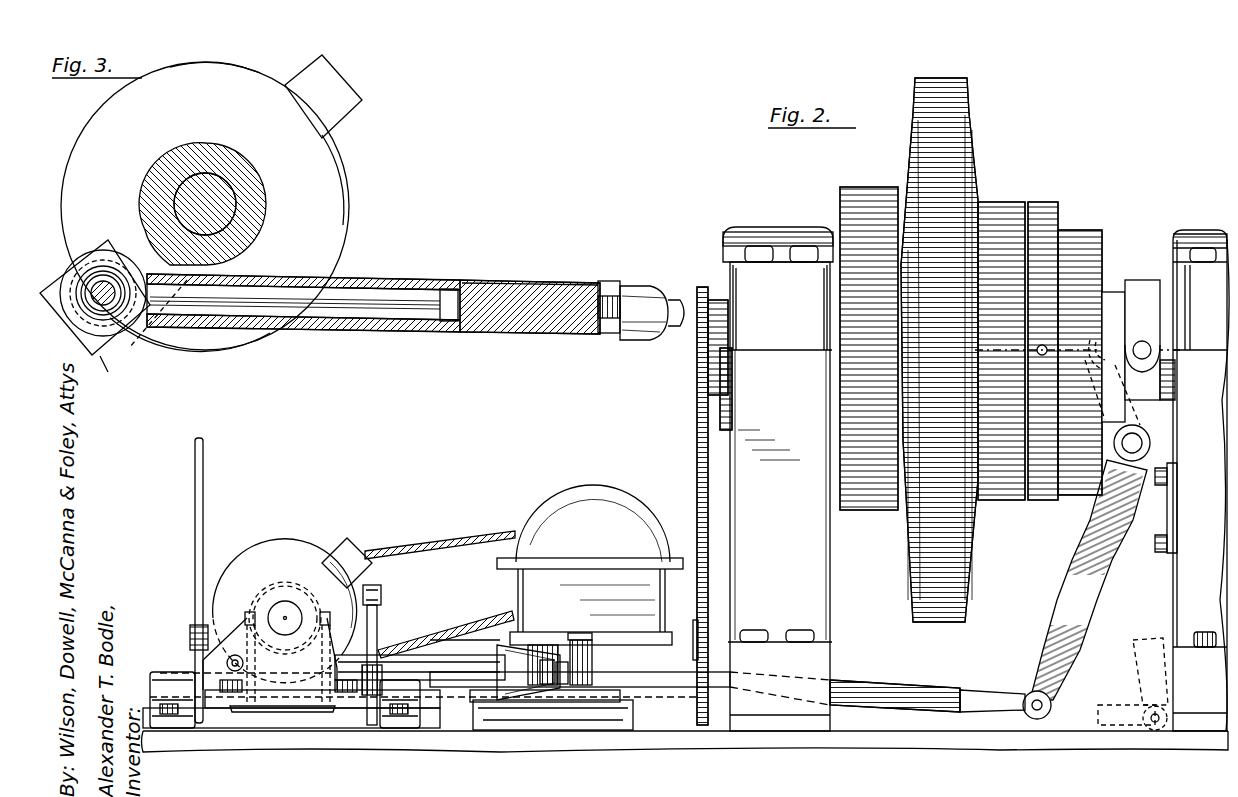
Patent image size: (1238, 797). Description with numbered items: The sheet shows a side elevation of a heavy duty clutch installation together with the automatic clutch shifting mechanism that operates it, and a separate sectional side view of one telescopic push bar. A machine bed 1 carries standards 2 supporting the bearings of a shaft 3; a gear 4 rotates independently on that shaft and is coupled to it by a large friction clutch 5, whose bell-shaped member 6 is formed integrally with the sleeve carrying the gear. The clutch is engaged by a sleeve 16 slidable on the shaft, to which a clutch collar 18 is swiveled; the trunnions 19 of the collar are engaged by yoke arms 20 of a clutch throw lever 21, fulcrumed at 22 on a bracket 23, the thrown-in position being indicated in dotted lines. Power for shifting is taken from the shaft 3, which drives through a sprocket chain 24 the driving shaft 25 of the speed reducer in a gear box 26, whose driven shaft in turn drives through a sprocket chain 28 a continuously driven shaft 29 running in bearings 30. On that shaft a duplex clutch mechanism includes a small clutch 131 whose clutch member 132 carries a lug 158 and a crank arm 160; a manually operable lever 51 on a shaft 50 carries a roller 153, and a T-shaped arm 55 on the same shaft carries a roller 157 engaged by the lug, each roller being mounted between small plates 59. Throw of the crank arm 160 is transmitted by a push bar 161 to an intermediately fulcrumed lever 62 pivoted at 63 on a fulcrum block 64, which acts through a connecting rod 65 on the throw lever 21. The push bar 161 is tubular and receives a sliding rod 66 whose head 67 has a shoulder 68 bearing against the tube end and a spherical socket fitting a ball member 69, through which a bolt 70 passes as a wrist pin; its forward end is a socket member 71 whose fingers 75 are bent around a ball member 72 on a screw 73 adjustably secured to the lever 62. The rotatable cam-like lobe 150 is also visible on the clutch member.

In FIG. 2, the machine bed 1 is at (914, 740).
In FIG. 2, the standards 2 is at (824, 578).
In FIG. 2, the shaft 3 is at (695, 375).
In FIG. 2, the gear 4 is at (870, 498).
In FIG. 2, the large friction clutch 5 is at (980, 153).
In FIG. 2, the bell-shaped member 6 is at (908, 152).
In FIG. 2, the sleeve 16 is at (1112, 298).
In FIG. 2, the clutch collar 18 is at (1140, 283).
In FIG. 2, the trunnions 19 is at (1142, 341).
In FIG. 2, the yoke arms 20 is at (1168, 388).
In FIG. 2, the clutch throw lever 21 is at (1088, 563).
In FIG. 2, the fulcrum 22 is at (1152, 443).
In FIG. 2, the bracket 23 is at (1162, 528).
In FIG. 2, the sprocket chain 24 is at (698, 478).
In FIG. 2, the driving shaft 25 is at (700, 624).
In FIG. 2, the gear box 26 is at (543, 596).
In FIG. 2, the sprocket chain 28 is at (437, 548).
In FIG. 3, the shaft 29 is at (222, 208).
In FIG. 2, the shaft 29 is at (286, 604).
In FIG. 2, the bearings 30 is at (252, 612).
In FIG. 2, the shaft 50 is at (148, 690).
In FIG. 2, the lever 51 is at (204, 488).
In FIG. 2, the T-shaped arm 55 is at (380, 650).
In FIG. 2, the small plates 59 is at (378, 594).
In FIG. 2, the intermediately fulcrumed lever 62 is at (542, 648).
In FIG. 2, the pivot 63 is at (580, 634).
In FIG. 2, the fulcrum block 64 is at (486, 712).
In FIG. 2, the connecting rod 65 is at (910, 690).
In FIG. 3, the rod 66 is at (386, 312).
In FIG. 2, the rod 66 is at (425, 676).
In FIG. 3, the head 67 is at (112, 270).
In FIG. 3, the shoulder 68 is at (150, 280).
In FIG. 3, the ball member 69 is at (157, 323).
In FIG. 3, the bolt 70 is at (128, 197).
In FIG. 3, the socket member 71 is at (642, 300).
In FIG. 2, the socket member 71 is at (508, 662).
In FIG. 3, the ball member 72 is at (612, 288).
In FIG. 2, the ball member 72 is at (546, 690).
In FIG. 2, the screw 73 is at (566, 688).
In FIG. 3, the fingers 75 is at (674, 306).
In FIG. 3, the small clutch 131 is at (354, 176).
In FIG. 2, the small clutch 131 is at (293, 548).
In FIG. 3, the clutch member 132 is at (232, 82).
In FIG. 3, the cam lobe 150 is at (366, 98).
In FIG. 2, the cam lobe 150 is at (352, 554).
In FIG. 2, the roller 153 is at (196, 630).
In FIG. 2, the roller 157 is at (380, 640).
In FIG. 3, the lug 158 is at (100, 358).
In FIG. 3, the crank arm 160 is at (128, 208).
In FIG. 2, the crank arm 160 is at (238, 652).
In FIG. 3, the push bar 161 is at (490, 290).
In FIG. 2, the push bar 161 is at (468, 668).